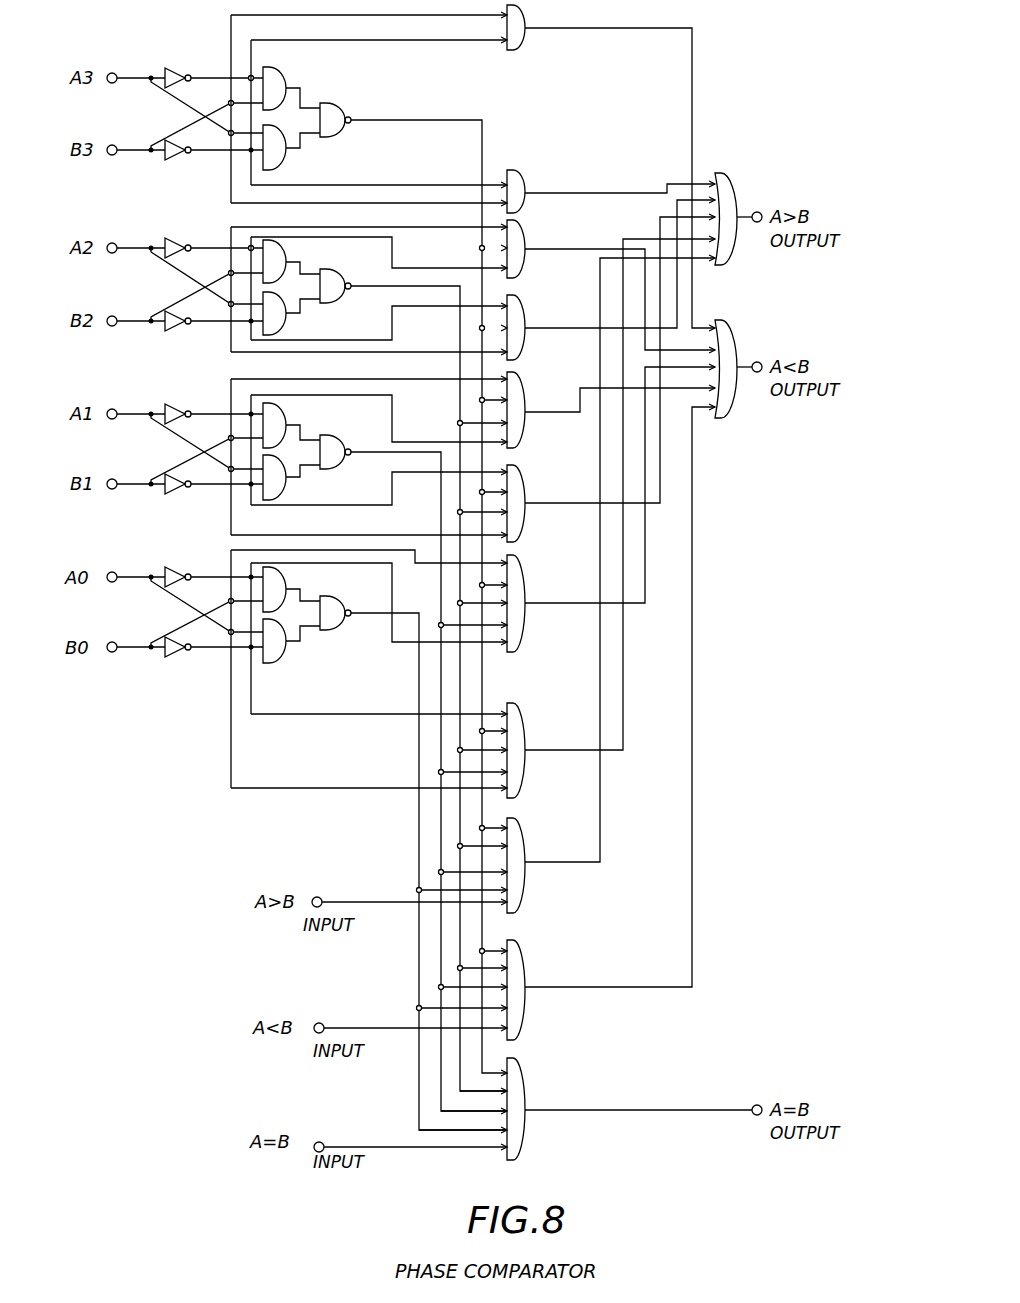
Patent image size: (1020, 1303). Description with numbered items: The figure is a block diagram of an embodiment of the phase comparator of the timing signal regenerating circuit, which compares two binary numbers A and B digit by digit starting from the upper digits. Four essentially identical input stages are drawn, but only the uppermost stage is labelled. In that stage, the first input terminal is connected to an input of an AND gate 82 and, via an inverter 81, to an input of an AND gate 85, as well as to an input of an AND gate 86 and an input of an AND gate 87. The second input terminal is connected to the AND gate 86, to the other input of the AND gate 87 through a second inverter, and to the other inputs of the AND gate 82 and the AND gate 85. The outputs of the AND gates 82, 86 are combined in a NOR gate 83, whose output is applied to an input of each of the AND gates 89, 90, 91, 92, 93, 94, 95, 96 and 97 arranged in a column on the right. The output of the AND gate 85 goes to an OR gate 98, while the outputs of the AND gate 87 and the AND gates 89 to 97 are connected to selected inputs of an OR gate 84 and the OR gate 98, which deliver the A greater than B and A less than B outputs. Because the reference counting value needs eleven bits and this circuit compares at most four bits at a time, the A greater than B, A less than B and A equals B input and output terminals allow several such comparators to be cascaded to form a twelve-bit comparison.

The inverter 81 is at (202, 42).
The AND gate 82 is at (265, 70).
The NOR gate 83 is at (348, 113).
The OR gate 84 is at (738, 179).
The AND gate 85 is at (524, 33).
The AND gate 86 is at (284, 161).
The AND gate 87 is at (523, 183).
The AND gate 89 is at (520, 229).
The AND gate 90 is at (526, 300).
The AND gate 91 is at (526, 383).
The AND gate 92 is at (526, 476).
The AND gate 93 is at (526, 569).
The AND gate 94 is at (526, 724).
The AND gate 95 is at (523, 889).
The AND gate 96 is at (523, 1017).
The AND gate 97 is at (523, 1139).
The OR gate 98 is at (738, 333).